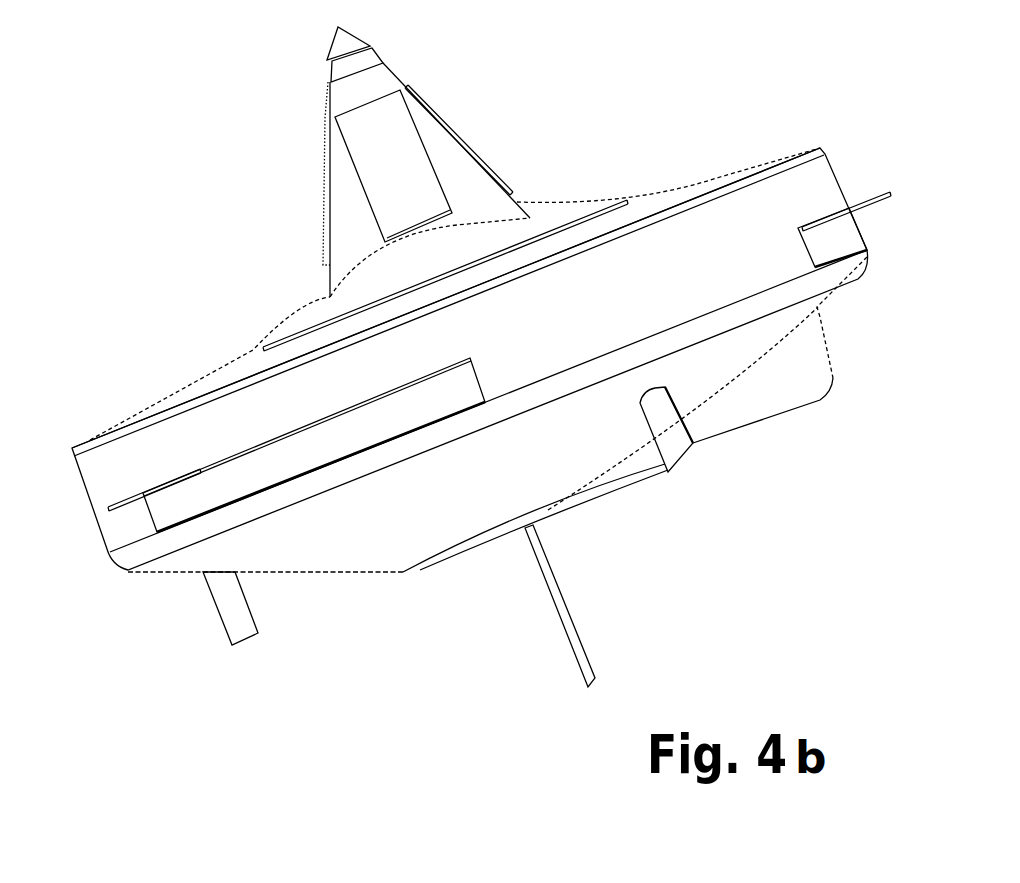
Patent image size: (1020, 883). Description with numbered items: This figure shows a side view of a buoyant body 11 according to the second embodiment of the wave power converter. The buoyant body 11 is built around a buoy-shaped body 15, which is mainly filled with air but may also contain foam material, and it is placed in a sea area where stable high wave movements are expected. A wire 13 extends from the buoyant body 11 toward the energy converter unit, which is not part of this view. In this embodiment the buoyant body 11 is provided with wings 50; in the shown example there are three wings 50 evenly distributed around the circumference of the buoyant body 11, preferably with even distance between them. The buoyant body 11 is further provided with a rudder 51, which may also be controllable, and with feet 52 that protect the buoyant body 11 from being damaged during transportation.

The buoyant body 11 is at (118, 253).
The wire 13 is at (563, 602).
The buoy-shaped body 15 is at (187, 395).
The wing 50 is at (128, 497).
The rudder 51 is at (758, 400).
The foot 52 is at (238, 632).